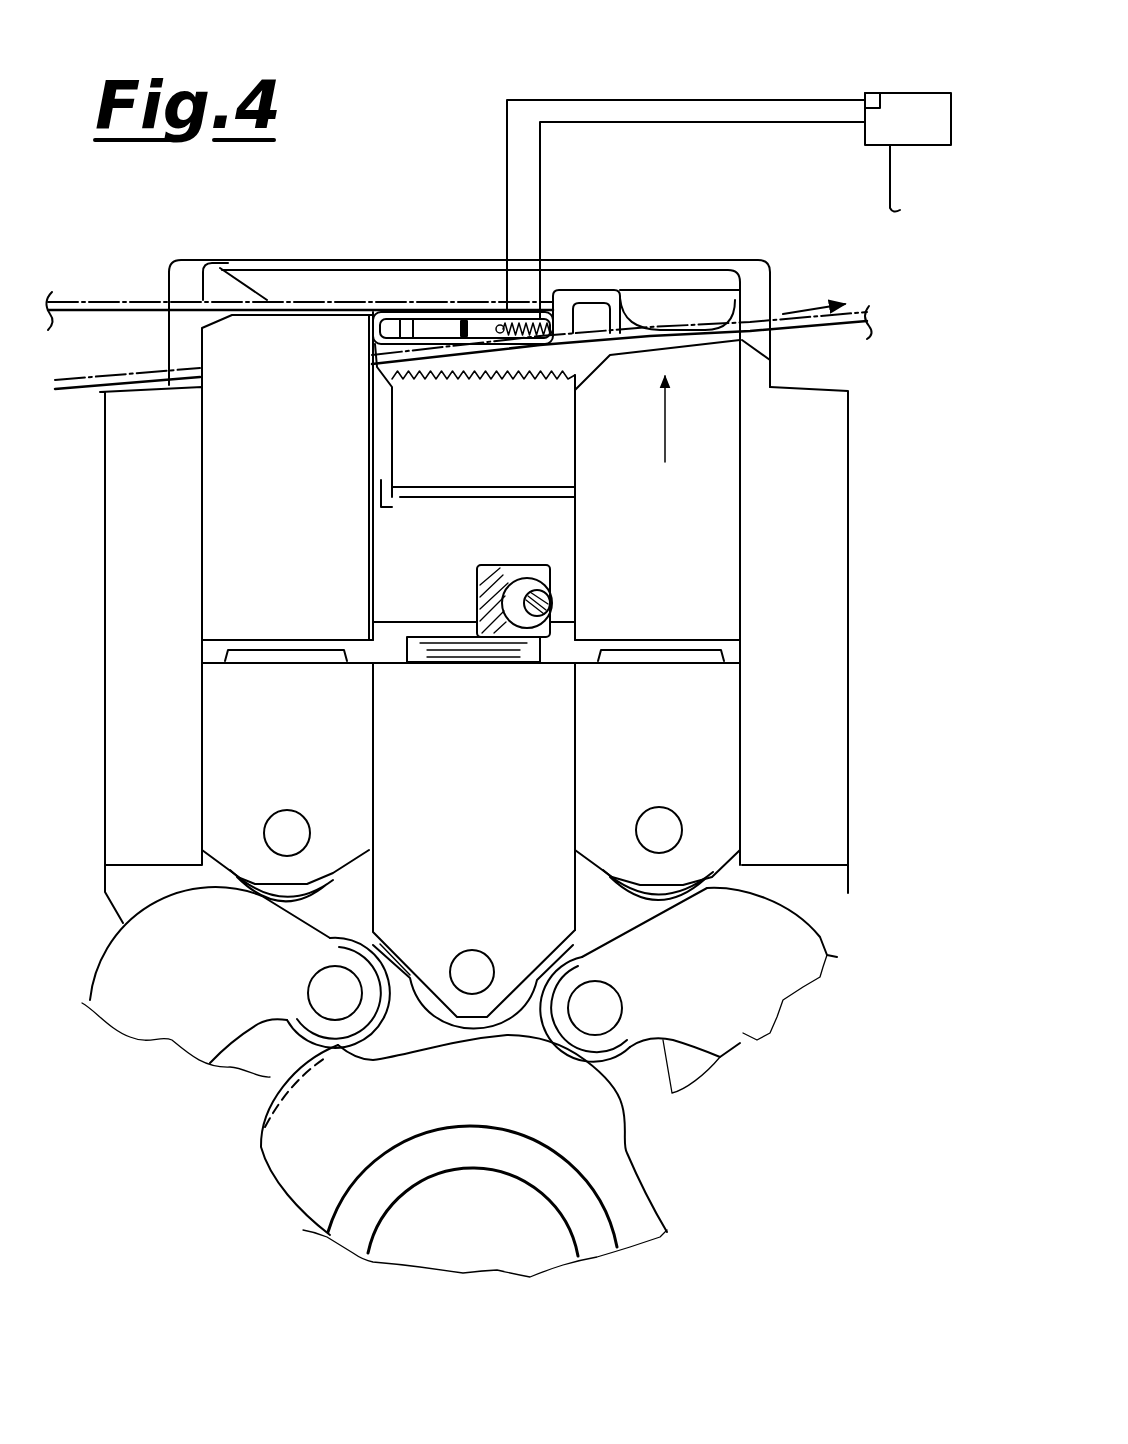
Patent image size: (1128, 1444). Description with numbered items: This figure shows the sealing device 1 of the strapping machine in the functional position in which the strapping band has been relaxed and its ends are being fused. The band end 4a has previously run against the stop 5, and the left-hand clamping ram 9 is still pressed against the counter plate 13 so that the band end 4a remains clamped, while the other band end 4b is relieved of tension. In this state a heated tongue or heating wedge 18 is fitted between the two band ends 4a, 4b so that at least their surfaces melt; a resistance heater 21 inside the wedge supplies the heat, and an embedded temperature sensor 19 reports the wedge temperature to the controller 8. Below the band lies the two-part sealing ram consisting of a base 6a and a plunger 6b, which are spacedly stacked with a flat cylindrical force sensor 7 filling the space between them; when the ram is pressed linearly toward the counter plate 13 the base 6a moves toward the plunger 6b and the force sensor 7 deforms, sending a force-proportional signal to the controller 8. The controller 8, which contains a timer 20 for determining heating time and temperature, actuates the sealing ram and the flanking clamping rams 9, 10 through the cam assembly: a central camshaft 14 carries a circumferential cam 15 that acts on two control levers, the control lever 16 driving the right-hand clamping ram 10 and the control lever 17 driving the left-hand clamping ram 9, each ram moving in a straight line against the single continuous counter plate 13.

The sealing device 1 is at (397, 88).
The band end 4a is at (141, 296).
The band end 4b is at (853, 327).
The stop 5 is at (592, 299).
The base 6a is at (396, 722).
The plunger 6b is at (411, 442).
The force sensor 7 is at (582, 652).
The controller 8 is at (884, 147).
The left-hand clamping ram 9 is at (223, 588).
The right-hand clamping ram 10 is at (720, 537).
The counter plate 13 is at (316, 291).
The central camshaft 14 is at (415, 1253).
The cam 15 is at (255, 1147).
The control lever 16 is at (757, 1040).
The control lever 17 is at (187, 1027).
The heating wedge 18 is at (440, 318).
The temperature sensor 19 is at (503, 325).
The timer 20 is at (876, 93).
The heater 21 is at (537, 343).